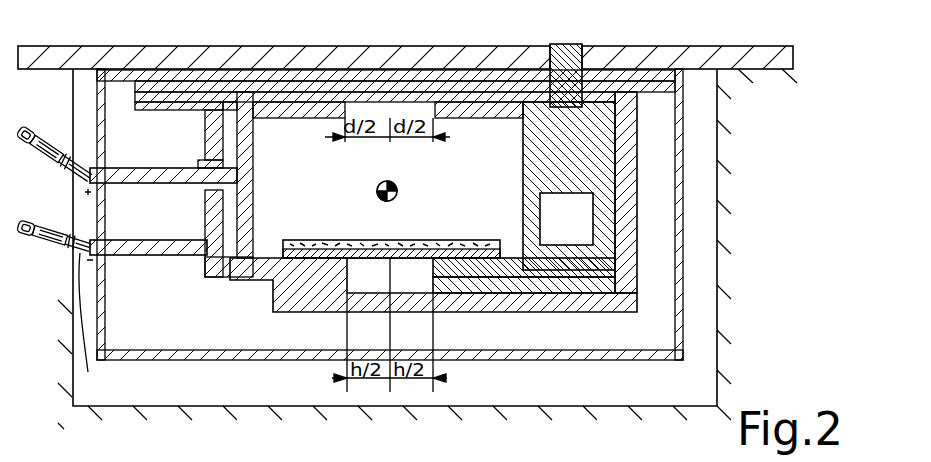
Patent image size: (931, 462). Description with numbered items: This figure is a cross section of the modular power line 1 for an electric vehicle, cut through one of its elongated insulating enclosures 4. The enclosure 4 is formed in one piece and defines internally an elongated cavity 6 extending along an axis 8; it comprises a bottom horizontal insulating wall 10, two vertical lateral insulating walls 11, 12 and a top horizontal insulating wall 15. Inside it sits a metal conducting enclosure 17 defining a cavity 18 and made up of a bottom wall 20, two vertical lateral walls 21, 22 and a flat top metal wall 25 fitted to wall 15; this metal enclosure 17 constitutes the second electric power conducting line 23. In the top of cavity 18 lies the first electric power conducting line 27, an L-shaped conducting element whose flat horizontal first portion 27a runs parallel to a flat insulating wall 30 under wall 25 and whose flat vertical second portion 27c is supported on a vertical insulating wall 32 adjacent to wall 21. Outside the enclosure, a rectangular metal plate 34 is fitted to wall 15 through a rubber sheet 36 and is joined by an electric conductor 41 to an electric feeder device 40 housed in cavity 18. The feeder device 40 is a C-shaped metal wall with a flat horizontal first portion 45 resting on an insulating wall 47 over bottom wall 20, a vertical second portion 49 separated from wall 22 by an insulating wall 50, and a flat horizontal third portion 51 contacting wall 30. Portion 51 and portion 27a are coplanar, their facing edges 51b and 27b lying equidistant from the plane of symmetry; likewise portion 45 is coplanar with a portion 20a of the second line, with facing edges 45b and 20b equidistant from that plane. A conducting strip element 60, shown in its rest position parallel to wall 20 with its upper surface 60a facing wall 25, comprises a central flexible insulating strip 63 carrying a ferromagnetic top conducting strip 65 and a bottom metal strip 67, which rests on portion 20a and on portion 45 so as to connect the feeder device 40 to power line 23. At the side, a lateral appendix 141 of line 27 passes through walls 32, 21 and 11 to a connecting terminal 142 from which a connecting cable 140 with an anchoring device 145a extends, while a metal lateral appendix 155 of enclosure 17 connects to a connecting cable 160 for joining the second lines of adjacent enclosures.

The modular power line 1 is at (407, 39).
The insulating enclosure 4 is at (700, 252).
The cavity 6 is at (139, 340).
The axis 8 is at (410, 200).
The bottom horizontal insulating wall 10 is at (275, 358).
The vertical lateral insulating wall 11 is at (100, 200).
The vertical lateral insulating wall 12 is at (680, 195).
The top horizontal insulating wall 15 is at (121, 80).
The metal conducting enclosure 17 is at (182, 191).
The cavity 18 is at (205, 148).
The bottom wall 20 is at (372, 298).
The portion of second electric power line 20a is at (300, 275).
The facing edge 20b is at (340, 265).
The vertical lateral wall 21 is at (200, 230).
The vertical lateral wall 22 is at (625, 168).
The second electric power conducting line 23 is at (222, 299).
The flat top metal wall 25 is at (163, 90).
The first electric power conducting line 27 is at (272, 141).
The flat horizontal first portion 27a is at (255, 108).
The facing edge 27b is at (337, 107).
The flat vertical second portion 27c is at (208, 198).
The flat insulating wall 30 is at (295, 95).
The vertical insulating wall 32 is at (230, 115).
The rectangular metal plate 34 is at (660, 50).
The rubber sheet 36 is at (110, 75).
The electric feeder device 40 is at (514, 161).
The electric conductor 41 is at (573, 47).
The flat horizontal first portion 45 is at (517, 272).
The facing edge 45b is at (460, 300).
The insulating wall 47 is at (547, 277).
The vertical second portion 49 is at (605, 137).
The insulating wall 50 is at (610, 258).
The flat horizontal third portion 51 is at (510, 107).
The facing edge 51b is at (447, 107).
The conducting strip element 60 is at (436, 196).
The sample carrier surface 60a is at (312, 223).
The central portion 63 is at (305, 242).
The flexible top conducting strip 65 is at (343, 240).
The metal strip 67 is at (400, 331).
The connecting cable 140 is at (60, 152).
The lateral appendix 141 is at (138, 167).
The connecting terminal 142 is at (93, 168).
The anchoring device 145a is at (33, 172).
The metal lateral appendix 155 is at (188, 247).
The connecting cable 160 is at (100, 330).